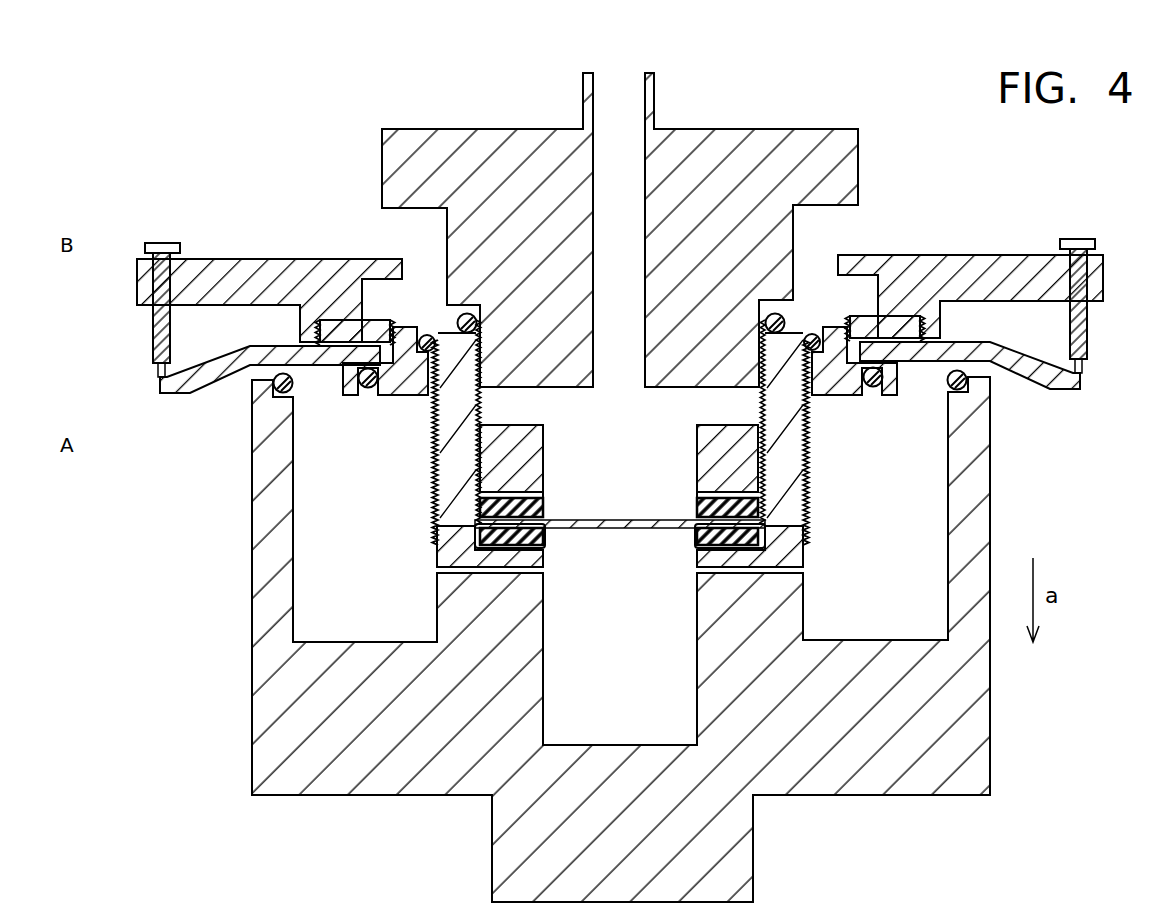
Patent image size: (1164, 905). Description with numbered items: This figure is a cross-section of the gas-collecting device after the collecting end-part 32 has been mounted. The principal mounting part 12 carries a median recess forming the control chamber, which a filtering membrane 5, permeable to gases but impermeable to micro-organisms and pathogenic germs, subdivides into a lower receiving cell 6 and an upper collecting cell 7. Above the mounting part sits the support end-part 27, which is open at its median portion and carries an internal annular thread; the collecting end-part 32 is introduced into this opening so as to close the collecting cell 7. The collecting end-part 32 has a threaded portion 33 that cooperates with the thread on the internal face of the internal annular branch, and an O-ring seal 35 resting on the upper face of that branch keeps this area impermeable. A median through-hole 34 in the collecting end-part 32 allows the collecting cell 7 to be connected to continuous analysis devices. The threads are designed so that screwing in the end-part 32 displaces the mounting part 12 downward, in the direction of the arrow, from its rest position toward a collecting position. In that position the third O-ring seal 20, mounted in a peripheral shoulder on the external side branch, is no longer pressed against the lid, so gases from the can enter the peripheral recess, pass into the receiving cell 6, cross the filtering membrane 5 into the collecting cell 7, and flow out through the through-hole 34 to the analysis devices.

The median through-hole 34 is at (620, 97).
The collecting end-part 32 is at (753, 180).
The support end-part 27 is at (950, 272).
The O-ring seal 35 is at (787, 322).
The threaded portion 33 is at (808, 400).
The third O-ring seal 20 is at (947, 381).
The collecting cell 7 is at (626, 459).
The filtering membrane 5 is at (648, 528).
The receiving cell 6 is at (633, 705).
The principal mounting part 12 is at (920, 738).